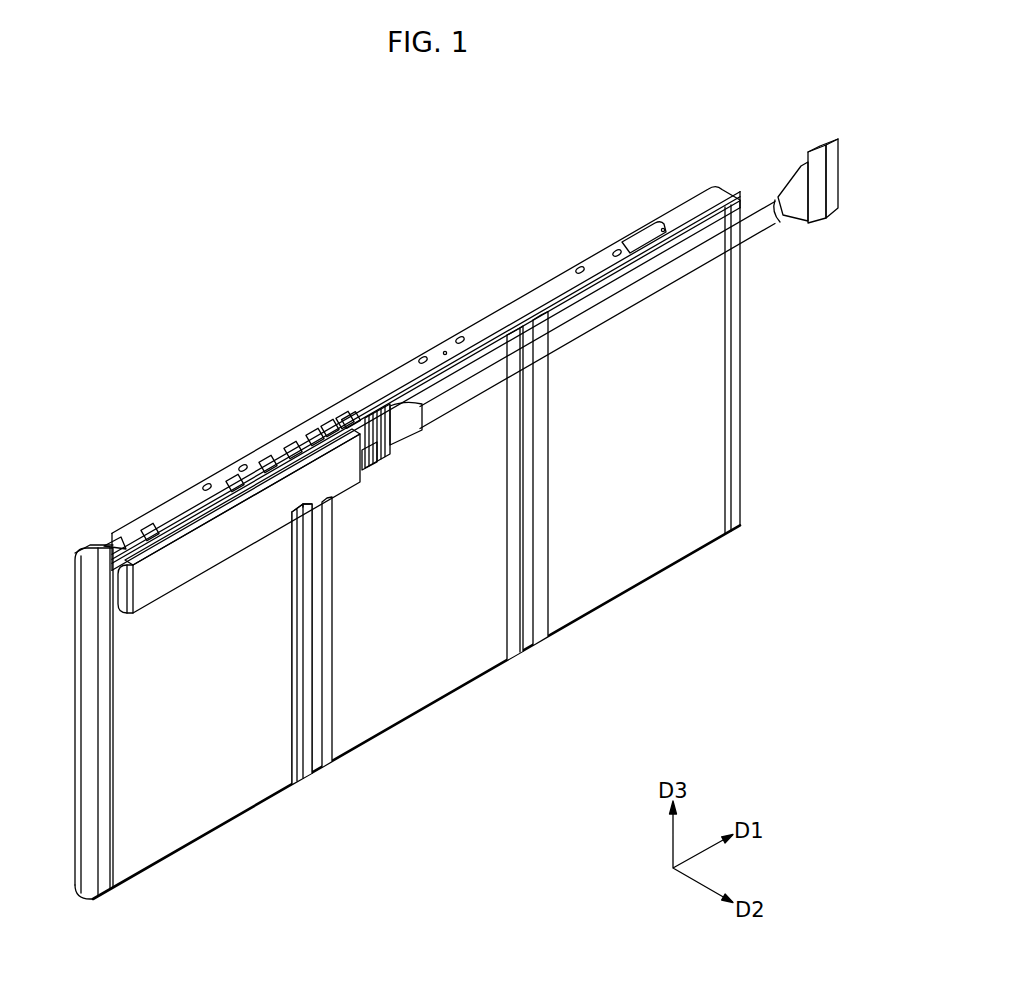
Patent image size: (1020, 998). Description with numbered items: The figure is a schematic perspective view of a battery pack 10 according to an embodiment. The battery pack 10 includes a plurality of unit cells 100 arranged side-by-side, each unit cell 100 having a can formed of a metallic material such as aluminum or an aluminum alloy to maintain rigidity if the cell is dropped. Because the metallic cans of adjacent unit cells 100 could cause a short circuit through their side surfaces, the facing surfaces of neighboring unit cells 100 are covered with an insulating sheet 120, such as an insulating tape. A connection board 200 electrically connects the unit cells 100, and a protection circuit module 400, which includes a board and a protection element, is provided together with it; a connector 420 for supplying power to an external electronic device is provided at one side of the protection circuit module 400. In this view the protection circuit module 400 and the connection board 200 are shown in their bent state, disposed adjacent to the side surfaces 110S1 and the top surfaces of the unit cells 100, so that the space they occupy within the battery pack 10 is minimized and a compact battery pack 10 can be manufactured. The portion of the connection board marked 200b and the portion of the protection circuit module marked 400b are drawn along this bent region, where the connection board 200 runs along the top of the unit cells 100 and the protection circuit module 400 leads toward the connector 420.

The battery pack 10 is at (746, 141).
The unit cell 100 is at (416, 562).
The side surface 110S1 is at (163, 835).
The insulating sheet 120 is at (110, 888).
The connection board 200 is at (426, 370).
The upper surface of frame 200b is at (515, 307).
The protection circuit module 400 is at (121, 545).
The connector housing of circuit board 400b is at (337, 487).
The connector 420 is at (803, 213).